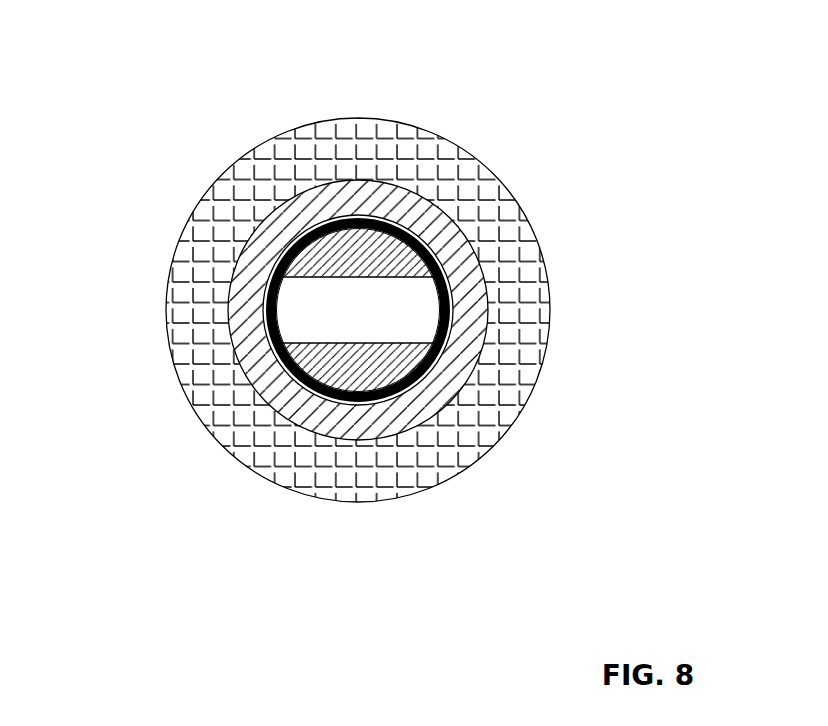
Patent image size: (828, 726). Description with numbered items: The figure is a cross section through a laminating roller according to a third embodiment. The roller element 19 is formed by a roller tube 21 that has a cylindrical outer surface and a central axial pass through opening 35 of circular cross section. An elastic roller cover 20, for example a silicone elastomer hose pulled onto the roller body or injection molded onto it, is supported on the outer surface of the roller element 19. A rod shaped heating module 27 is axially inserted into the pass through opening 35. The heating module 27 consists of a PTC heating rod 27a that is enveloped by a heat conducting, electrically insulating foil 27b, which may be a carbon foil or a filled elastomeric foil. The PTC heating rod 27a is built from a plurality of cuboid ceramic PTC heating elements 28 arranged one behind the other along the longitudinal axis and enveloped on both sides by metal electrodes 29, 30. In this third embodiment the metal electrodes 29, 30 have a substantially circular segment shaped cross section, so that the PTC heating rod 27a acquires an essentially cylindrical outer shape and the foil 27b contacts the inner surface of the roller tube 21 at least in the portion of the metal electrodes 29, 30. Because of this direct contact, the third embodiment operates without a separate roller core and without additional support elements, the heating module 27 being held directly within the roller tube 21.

The roller cover 20 is at (398, 147).
The metal electrode 29 is at (318, 248).
The roller element 19 is at (427, 192).
The roller tube 21 is at (458, 245).
The rod shaped heating module 27 is at (427, 372).
The PTC heating elements 28 is at (292, 311).
The pass through opening 35 is at (283, 395).
The metal electrode 30 is at (320, 395).
The PTC heating rod 27a is at (375, 390).
The foil 27b is at (413, 387).